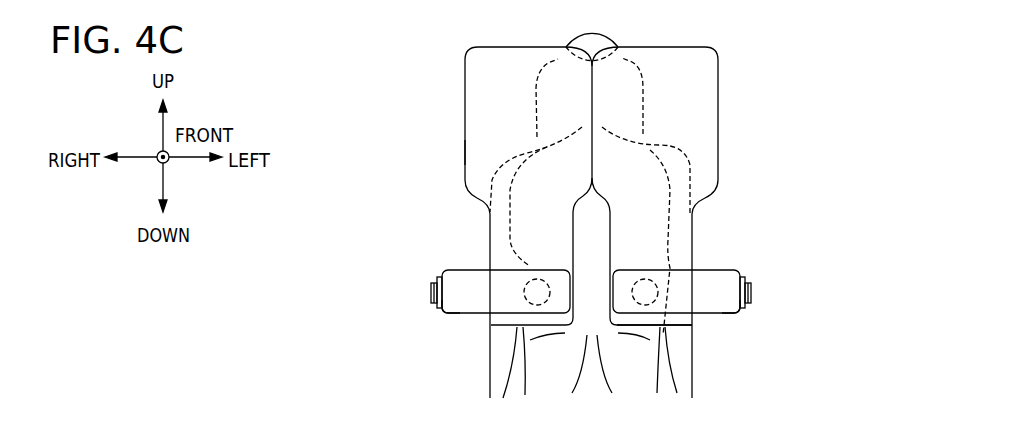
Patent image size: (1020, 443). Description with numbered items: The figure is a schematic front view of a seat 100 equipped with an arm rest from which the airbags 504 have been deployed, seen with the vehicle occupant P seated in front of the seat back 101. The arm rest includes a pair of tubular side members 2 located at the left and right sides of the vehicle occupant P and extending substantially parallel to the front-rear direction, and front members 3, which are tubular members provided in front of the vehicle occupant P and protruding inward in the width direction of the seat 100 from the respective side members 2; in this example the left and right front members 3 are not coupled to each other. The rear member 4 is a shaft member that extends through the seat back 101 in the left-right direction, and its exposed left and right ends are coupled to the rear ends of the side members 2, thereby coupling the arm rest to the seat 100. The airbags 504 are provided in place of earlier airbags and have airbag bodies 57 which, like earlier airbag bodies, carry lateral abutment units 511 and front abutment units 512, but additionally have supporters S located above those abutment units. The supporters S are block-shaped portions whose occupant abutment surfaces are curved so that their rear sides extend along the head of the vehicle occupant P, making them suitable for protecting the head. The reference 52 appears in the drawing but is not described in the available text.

The supporter S is at (460, 51).
The vehicle occupant P is at (607, 35).
The seat 100 is at (482, 355).
The seat back 101 is at (688, 143).
The airbags 504 is at (407, 130).
The airbag body 57 is at (462, 150).
The inflator 52 is at (528, 278).
The lateral abutment unit 511 is at (675, 267).
The front abutment unit 512 is at (697, 333).
The front member 3 is at (460, 278).
The rear member 4 is at (431, 293).
The side member 2 is at (442, 312).